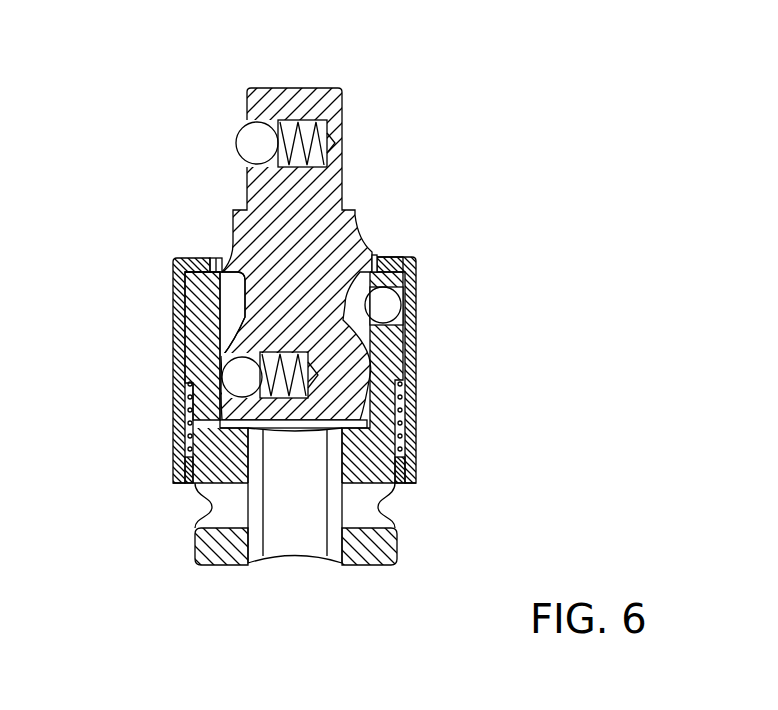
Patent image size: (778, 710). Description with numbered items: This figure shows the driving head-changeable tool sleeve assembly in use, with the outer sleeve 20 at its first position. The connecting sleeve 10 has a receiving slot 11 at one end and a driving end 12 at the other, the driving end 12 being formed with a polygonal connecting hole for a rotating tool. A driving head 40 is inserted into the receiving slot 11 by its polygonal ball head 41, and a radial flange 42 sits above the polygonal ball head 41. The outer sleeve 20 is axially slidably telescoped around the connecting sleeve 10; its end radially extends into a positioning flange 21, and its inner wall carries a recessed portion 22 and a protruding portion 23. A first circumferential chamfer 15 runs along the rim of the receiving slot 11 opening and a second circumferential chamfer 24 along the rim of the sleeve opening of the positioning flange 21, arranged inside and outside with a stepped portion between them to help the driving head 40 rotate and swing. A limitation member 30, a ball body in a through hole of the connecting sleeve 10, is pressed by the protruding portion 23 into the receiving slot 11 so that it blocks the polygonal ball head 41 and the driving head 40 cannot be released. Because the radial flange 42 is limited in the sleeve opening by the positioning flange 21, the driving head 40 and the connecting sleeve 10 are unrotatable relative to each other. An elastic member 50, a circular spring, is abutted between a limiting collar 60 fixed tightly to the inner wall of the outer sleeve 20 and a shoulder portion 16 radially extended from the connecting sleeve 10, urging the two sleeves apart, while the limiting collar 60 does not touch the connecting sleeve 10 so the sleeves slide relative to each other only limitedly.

The connecting sleeve 10 is at (395, 483).
The receiving slot 11 is at (232, 312).
The driving end 12 is at (205, 547).
The first circumferential chamfer 15 is at (210, 258).
The shoulder portion 16 is at (176, 393).
The outer sleeve 20 is at (410, 440).
The positioning flange 21 is at (385, 268).
The recessed portion 22 is at (413, 343).
The protruding portion 23 is at (405, 312).
The second circumferential chamfer 24 is at (222, 268).
The limitation member 30 is at (395, 302).
The driving head 40 is at (285, 100).
The polygonal ball head 41 is at (355, 398).
The radial flange 42 is at (374, 258).
The elastic member 50 is at (395, 395).
The limiting collar 60 is at (190, 470).